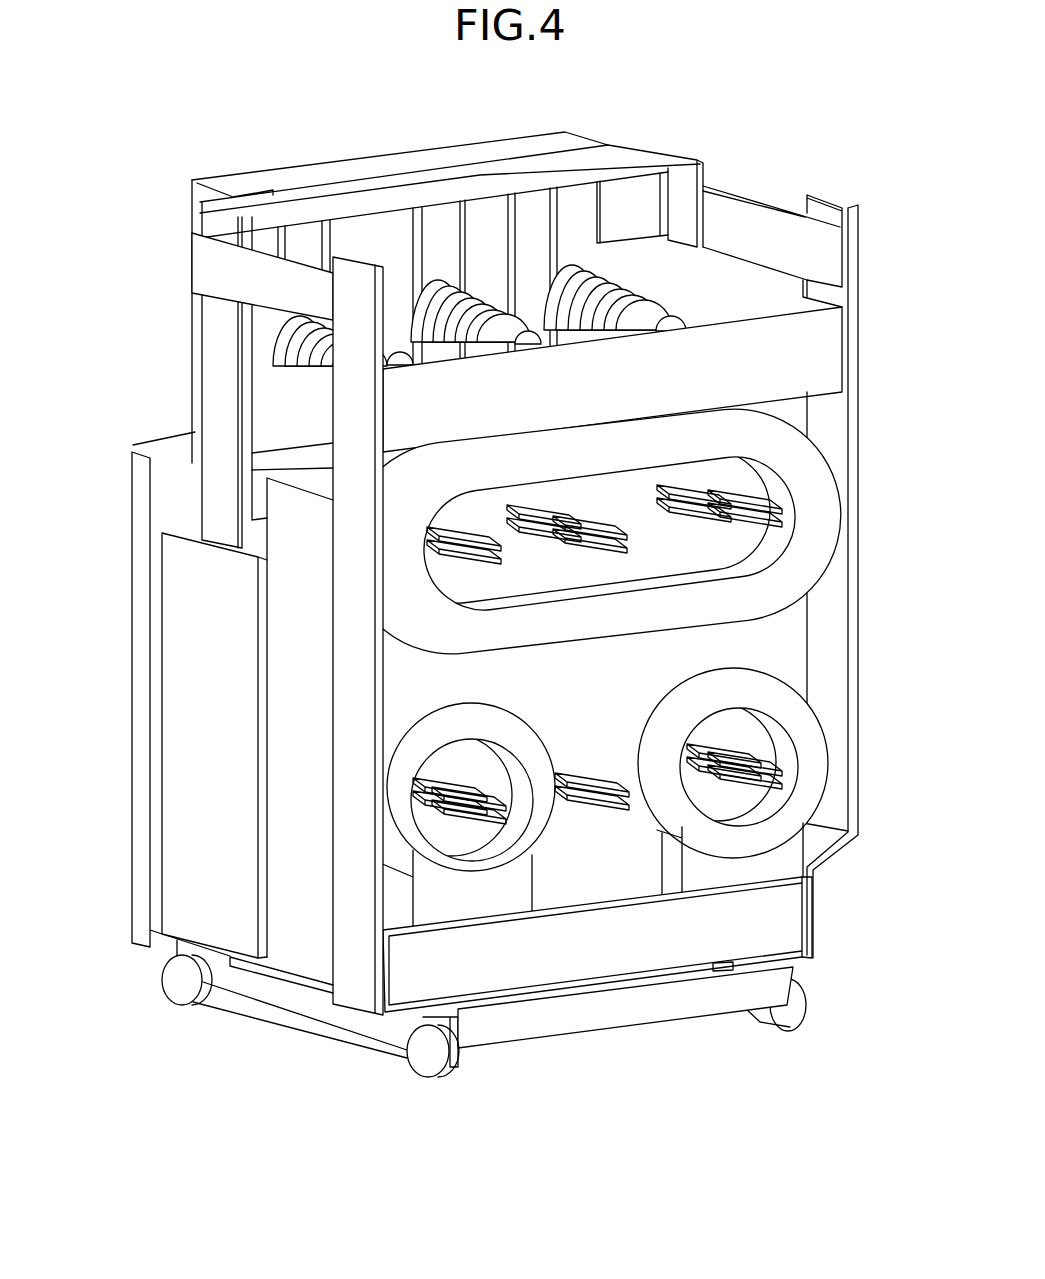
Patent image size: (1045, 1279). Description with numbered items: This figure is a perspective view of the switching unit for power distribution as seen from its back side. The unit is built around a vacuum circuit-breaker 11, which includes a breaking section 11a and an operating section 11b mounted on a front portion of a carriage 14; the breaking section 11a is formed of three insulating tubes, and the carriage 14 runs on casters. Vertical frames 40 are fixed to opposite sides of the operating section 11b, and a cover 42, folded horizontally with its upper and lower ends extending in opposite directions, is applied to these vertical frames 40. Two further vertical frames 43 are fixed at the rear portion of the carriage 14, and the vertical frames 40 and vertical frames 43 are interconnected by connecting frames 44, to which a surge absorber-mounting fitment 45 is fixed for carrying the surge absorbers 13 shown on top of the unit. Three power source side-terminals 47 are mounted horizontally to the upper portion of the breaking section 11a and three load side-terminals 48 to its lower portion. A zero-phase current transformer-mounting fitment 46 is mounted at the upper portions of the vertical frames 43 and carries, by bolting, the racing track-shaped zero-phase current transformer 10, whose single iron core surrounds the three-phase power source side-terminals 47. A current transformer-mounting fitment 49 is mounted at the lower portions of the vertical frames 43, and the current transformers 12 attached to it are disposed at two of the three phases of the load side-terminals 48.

The zero-phase current transformer 10 is at (833, 520).
The vacuum circuit-breaker 11 is at (136, 548).
The breaking section 11a is at (300, 958).
The operating section 11b is at (182, 847).
The current transformers 12 is at (519, 734).
The coil 13 is at (668, 312).
The carriage 14 is at (612, 1020).
The vertical frames 40 is at (211, 372).
The cover 42 is at (304, 166).
The vertical frames 43 is at (356, 688).
The connecting frames 44 is at (758, 211).
The surge absorber-mounting fitment 45 is at (641, 157).
The zero-phase current transformer-mounting fitment 46 is at (833, 351).
The power source side-terminals 47 is at (575, 540).
The load side-terminals 48 is at (609, 817).
The current transformer-mounting fitment 49 is at (797, 914).